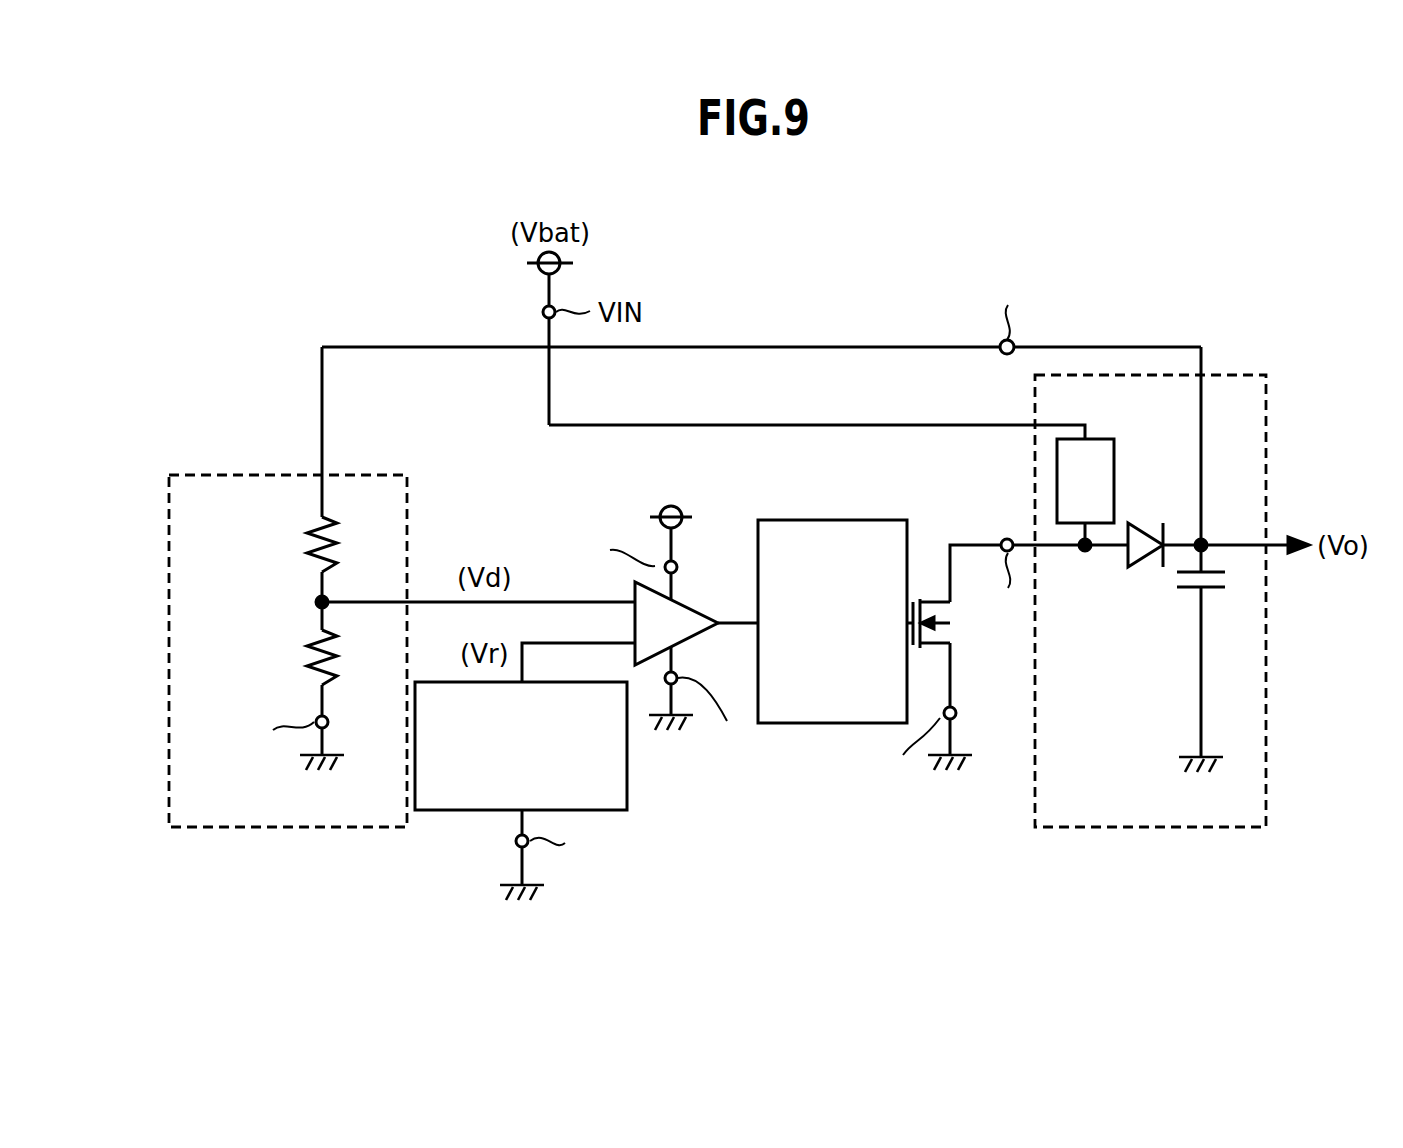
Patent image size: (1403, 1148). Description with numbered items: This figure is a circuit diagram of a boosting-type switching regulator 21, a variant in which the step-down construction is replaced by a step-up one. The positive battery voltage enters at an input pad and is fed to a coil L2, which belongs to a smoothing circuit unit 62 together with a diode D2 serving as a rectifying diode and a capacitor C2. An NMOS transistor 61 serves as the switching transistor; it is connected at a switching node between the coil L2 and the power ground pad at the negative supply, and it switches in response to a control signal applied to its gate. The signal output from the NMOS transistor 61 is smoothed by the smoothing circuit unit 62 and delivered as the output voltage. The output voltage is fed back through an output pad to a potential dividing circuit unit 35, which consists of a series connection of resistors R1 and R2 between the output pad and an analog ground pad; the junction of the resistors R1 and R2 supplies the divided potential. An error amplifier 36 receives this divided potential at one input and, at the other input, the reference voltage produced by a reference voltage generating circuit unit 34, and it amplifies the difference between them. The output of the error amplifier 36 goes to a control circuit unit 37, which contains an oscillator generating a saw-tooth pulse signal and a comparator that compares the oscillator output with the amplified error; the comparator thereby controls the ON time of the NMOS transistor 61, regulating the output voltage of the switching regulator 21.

The switching regulator 21 is at (860, 316).
The reference voltage generating circuit unit 34 is at (455, 810).
The potential dividing circuit unit 35 is at (329, 631).
The error amplifier 36 is at (696, 610).
The control circuit unit 37 is at (839, 520).
The NMOS transistor 61 is at (920, 597).
The smoothing circuit unit 62 is at (1149, 644).
The resistor R1 is at (342, 544).
The resistor R2 is at (342, 657).
The coil L2 is at (1085, 481).
The diode D2 is at (1143, 523).
The capacitor C2 is at (1181, 592).